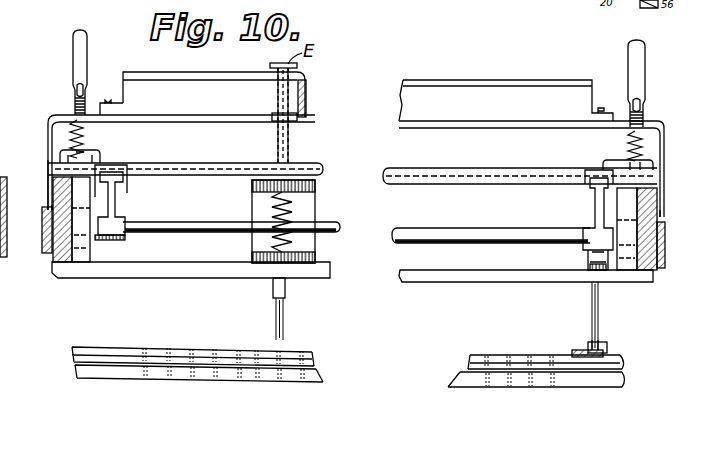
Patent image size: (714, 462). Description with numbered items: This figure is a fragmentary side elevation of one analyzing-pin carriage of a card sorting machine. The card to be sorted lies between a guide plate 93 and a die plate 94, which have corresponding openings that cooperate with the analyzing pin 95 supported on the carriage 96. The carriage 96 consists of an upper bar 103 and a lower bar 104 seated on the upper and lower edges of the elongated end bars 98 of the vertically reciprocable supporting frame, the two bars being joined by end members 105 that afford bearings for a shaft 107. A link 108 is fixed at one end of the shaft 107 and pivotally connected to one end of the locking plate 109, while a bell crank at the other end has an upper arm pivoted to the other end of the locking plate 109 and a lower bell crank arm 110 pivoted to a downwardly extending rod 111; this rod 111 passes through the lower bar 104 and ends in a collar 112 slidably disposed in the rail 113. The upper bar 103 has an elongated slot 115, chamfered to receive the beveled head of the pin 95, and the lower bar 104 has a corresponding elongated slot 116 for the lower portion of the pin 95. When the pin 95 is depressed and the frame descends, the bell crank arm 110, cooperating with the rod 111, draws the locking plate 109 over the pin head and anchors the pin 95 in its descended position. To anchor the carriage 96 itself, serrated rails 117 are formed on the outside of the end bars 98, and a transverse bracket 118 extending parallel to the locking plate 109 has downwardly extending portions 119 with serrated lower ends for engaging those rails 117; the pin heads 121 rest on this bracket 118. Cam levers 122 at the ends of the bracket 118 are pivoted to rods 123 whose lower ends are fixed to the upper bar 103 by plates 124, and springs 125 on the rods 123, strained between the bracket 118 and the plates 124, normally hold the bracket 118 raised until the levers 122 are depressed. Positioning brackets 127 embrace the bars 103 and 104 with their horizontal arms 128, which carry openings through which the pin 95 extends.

The guide plate 93 is at (203, 352).
The die plate 94 is at (182, 380).
The analyzing pin 95 is at (291, 307).
The carriage 96 is at (43, 125).
The end bar 98 is at (52, 255).
The upper bar 103 is at (47, 165).
The lower bar 104 is at (61, 265).
The end member 105 is at (84, 250).
The shaft 107 is at (215, 224).
The link 108 is at (113, 210).
The locking plate 109 is at (240, 152).
The bell crank arm 110 is at (596, 210).
The rod 111 is at (602, 302).
The collar 112 is at (590, 345).
The rail 113 is at (608, 351).
The elongated slot 115 is at (410, 176).
The elongated slot 116 is at (135, 267).
The serrated rail 117 is at (47, 248).
The transverse bracket 118 is at (185, 119).
The downwardly extending portion 119 is at (47, 195).
The head 121 is at (300, 110).
The cam lever 122 is at (73, 50).
The rod 123 is at (86, 96).
The plate 124 is at (90, 153).
The spring 125 is at (68, 125).
The bracket 127 is at (319, 207).
The horizontal arm 128 is at (320, 186).